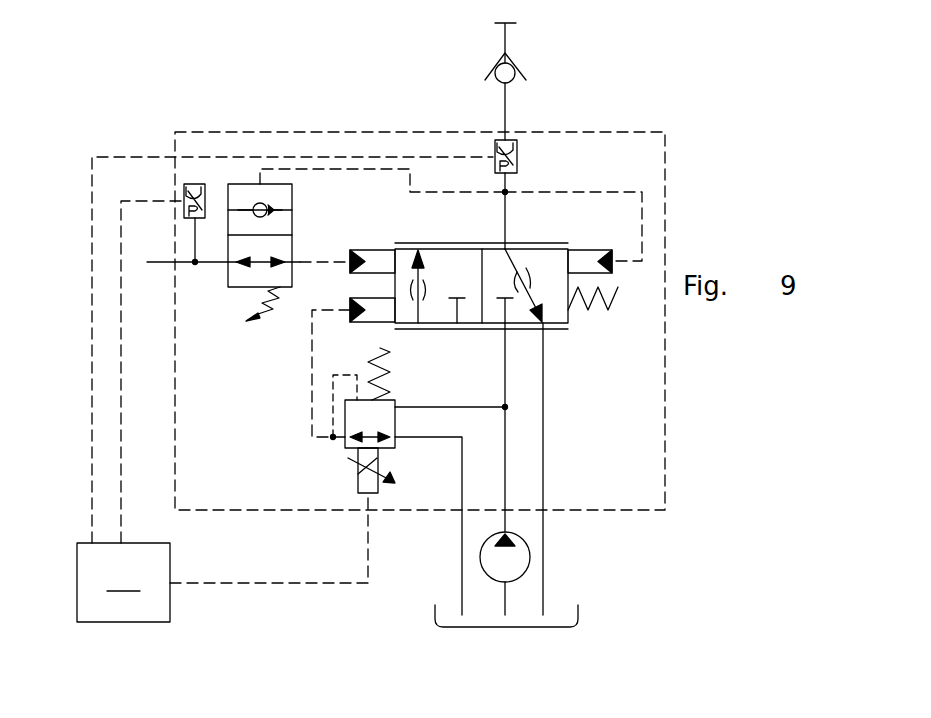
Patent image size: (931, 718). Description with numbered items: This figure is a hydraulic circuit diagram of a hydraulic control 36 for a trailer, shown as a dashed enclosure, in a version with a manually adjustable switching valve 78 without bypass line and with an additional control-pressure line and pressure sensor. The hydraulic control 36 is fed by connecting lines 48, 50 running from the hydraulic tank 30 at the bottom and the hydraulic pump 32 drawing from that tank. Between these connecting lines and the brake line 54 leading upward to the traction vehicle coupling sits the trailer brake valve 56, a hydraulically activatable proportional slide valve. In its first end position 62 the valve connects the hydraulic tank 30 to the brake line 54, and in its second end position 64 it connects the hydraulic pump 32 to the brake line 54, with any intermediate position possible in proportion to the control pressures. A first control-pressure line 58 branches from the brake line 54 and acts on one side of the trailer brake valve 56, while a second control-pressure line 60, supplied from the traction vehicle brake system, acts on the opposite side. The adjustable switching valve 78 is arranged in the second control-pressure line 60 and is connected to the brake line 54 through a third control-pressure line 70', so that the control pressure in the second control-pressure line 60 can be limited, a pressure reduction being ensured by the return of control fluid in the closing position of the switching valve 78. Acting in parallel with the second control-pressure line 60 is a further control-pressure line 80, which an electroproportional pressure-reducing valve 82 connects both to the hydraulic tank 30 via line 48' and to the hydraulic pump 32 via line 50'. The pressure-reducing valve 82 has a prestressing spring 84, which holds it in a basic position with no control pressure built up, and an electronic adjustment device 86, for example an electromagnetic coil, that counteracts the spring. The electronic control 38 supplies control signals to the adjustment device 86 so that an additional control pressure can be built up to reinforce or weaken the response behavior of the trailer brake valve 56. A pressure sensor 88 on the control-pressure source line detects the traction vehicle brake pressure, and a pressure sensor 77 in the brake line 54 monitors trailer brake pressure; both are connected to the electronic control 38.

The hydraulic tank 30 is at (580, 613).
The hydraulic pump 32 is at (530, 548).
The hydraulic control 36 is at (665, 181).
The electronic control 38 is at (285, 389).
The connecting line 48 is at (585, 469).
The line 48' is at (428, 526).
The connecting line 50 is at (562, 427).
The line 50' is at (451, 440).
The brake line 54 is at (505, 98).
The trailer brake valve 56 is at (465, 262).
The first control-pressure line 58 is at (585, 192).
The second control-pressure line 60 is at (328, 262).
The first end position 62 is at (553, 310).
The second end position 64 is at (435, 313).
The third control-pressure line 70' is at (382, 199).
The pressure sensor 77 is at (517, 153).
The adjustable switching valve 78 is at (228, 277).
The further control-pressure line 80 is at (310, 382).
The electroproportional pressure-reducing valve 82 is at (395, 419).
The prestressing spring 84 is at (383, 373).
The electronic adjustment device 86 is at (365, 485).
The pressure sensor 88 is at (195, 184).